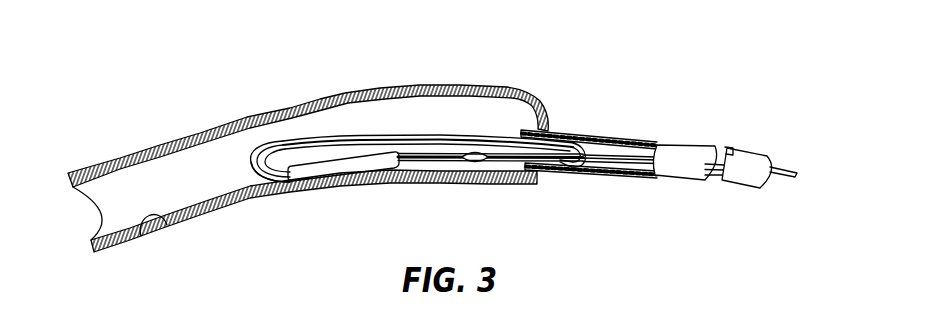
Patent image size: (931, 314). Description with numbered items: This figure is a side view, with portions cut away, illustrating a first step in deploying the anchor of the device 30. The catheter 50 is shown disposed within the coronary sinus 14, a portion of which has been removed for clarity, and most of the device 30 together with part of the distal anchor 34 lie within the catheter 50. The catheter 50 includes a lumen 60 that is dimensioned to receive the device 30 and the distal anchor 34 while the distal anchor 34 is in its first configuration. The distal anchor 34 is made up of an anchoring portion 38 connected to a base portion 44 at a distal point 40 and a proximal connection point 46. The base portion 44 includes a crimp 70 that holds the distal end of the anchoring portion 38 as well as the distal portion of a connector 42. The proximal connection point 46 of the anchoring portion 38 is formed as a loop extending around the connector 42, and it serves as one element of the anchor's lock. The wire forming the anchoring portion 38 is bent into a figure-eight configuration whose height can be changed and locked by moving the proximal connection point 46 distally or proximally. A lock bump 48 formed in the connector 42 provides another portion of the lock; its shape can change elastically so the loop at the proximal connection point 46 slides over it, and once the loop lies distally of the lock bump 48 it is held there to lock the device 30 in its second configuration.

The coronary sinus 14 is at (150, 153).
The device 30 is at (594, 151).
The distal anchor 34 is at (442, 131).
The anchoring portion 38 is at (320, 141).
The distal point 40 is at (256, 178).
The connector 42 is at (640, 167).
The base portion 44 is at (365, 163).
The proximal connection point 46 is at (585, 166).
The lock bump 48 is at (472, 165).
The catheter 50 is at (667, 140).
The lumen 60 is at (167, 225).
The crimp 70 is at (300, 176).